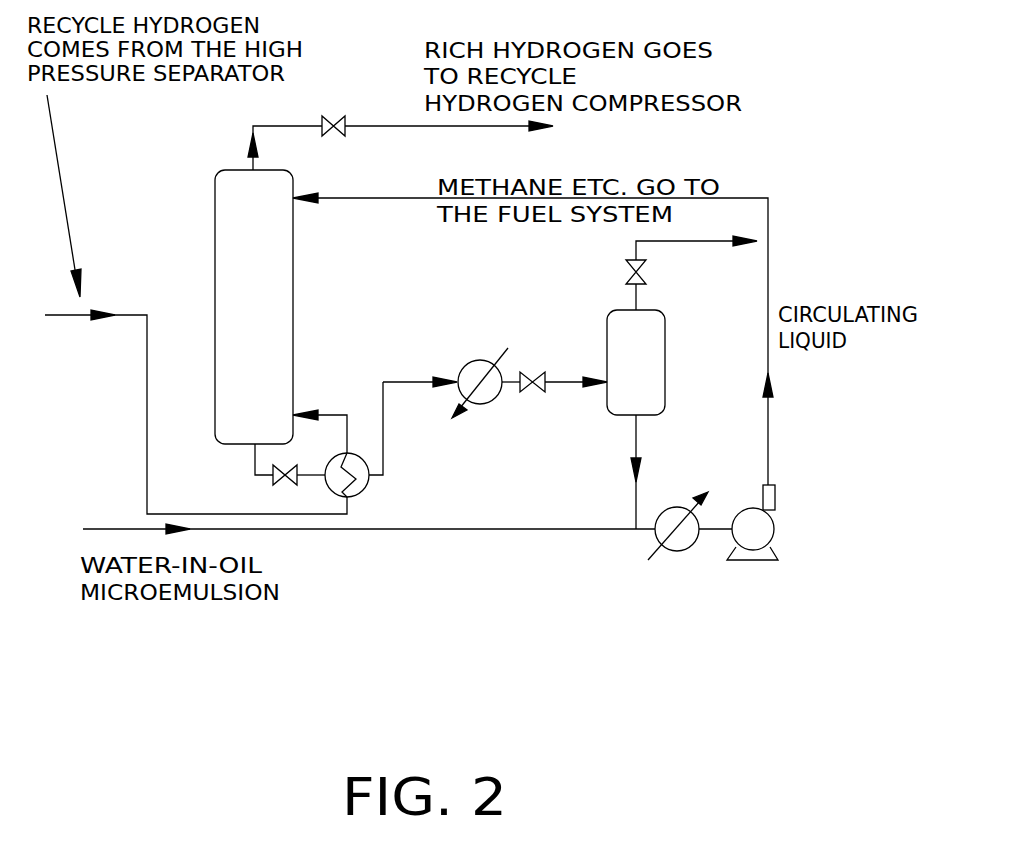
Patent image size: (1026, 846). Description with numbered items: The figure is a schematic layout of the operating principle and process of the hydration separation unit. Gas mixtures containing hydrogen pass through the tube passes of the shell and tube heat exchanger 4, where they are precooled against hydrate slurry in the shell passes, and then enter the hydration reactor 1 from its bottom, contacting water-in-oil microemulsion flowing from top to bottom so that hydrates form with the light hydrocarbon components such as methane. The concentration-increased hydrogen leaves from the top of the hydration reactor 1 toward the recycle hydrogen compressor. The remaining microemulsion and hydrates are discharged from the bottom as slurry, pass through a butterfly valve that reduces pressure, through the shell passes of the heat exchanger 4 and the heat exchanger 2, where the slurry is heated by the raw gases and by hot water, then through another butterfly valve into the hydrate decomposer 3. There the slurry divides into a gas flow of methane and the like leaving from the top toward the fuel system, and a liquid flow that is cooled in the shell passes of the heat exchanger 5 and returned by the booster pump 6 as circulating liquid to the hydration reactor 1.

The hydration reactor 1 is at (228, 270).
The heat exchanger 2 is at (480, 360).
The hydrate decomposer 3 is at (650, 340).
The heat exchanger 4 is at (368, 487).
The heat exchanger 5 is at (672, 549).
The booster pump 6 is at (765, 555).